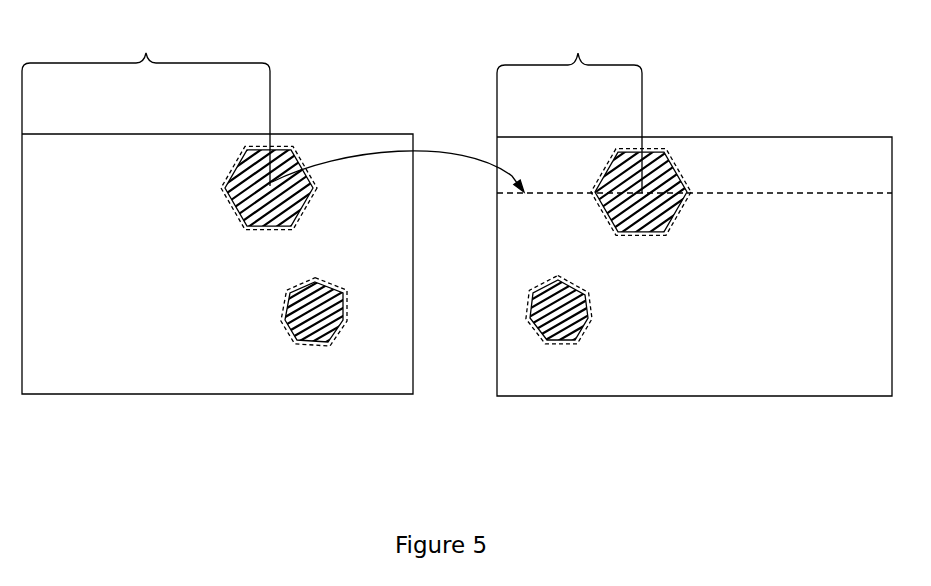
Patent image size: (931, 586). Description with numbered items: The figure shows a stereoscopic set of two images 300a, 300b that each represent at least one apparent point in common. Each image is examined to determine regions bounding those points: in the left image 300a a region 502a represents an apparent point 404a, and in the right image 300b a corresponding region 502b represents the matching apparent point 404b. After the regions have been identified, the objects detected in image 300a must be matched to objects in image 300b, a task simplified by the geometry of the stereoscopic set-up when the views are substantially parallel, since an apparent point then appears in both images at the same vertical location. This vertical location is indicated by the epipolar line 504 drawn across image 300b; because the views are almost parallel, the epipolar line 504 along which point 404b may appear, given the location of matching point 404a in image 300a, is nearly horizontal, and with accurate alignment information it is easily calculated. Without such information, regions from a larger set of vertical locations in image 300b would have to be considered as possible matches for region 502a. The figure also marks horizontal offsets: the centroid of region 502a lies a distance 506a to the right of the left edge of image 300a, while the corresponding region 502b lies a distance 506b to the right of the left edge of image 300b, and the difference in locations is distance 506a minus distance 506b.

The stereoscopic image 300a is at (325, 140).
The stereoscopic image 300b is at (848, 153).
The distance 506a is at (146, 104).
The distance 506b is at (569, 106).
The region 502a is at (297, 240).
The region 502b is at (638, 242).
The apparent point 404a is at (243, 222).
The apparent point 404b is at (641, 193).
The epipolar line 504 is at (739, 193).